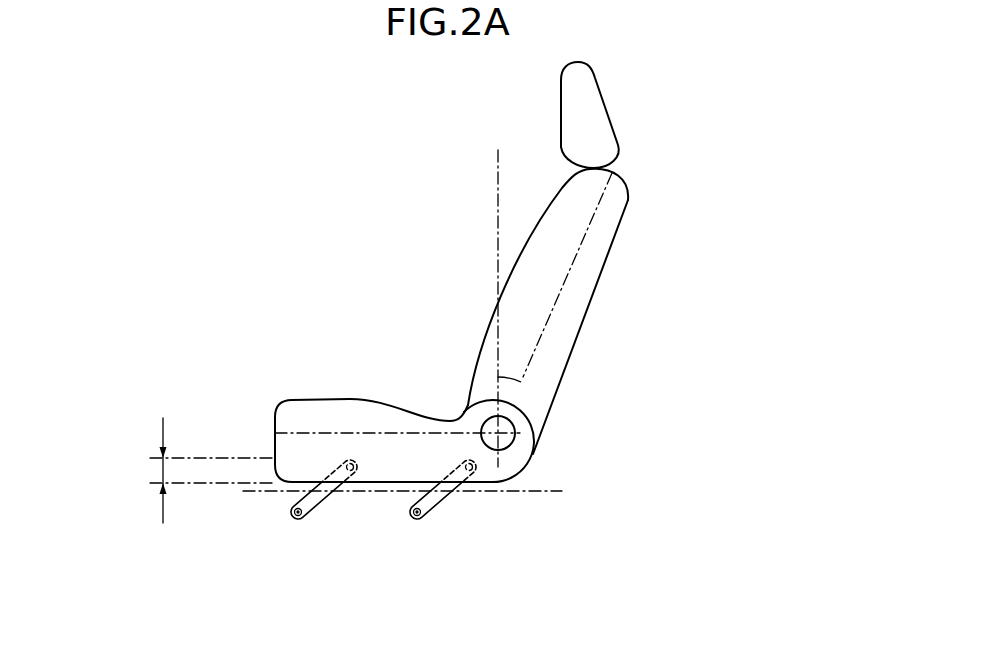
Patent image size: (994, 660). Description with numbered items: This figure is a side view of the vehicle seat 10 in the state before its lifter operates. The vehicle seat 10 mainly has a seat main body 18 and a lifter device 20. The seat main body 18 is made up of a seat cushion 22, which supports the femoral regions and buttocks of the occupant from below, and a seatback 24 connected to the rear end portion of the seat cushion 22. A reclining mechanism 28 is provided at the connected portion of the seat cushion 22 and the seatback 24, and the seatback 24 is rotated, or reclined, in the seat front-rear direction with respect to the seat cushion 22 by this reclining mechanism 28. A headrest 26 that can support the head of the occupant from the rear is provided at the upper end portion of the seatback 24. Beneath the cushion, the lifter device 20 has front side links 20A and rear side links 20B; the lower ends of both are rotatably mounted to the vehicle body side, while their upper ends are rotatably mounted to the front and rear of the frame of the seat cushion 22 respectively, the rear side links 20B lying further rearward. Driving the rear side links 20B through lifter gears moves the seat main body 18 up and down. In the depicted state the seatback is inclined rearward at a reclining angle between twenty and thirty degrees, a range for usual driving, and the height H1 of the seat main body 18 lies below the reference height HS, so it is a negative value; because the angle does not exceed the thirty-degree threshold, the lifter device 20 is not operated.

The vehicle seat 10 is at (375, 222).
The seat main body 18 is at (594, 298).
The lifter device 20 is at (453, 495).
The front side links 20A is at (323, 500).
The rear side links 20B is at (443, 500).
The seat cushion 22 is at (275, 427).
The seatback 24 is at (607, 257).
The headrest 26 is at (600, 90).
The reclining mechanism 28 is at (512, 418).
The reference height HS is at (160, 456).
The height of the seat main body H1 is at (162, 471).